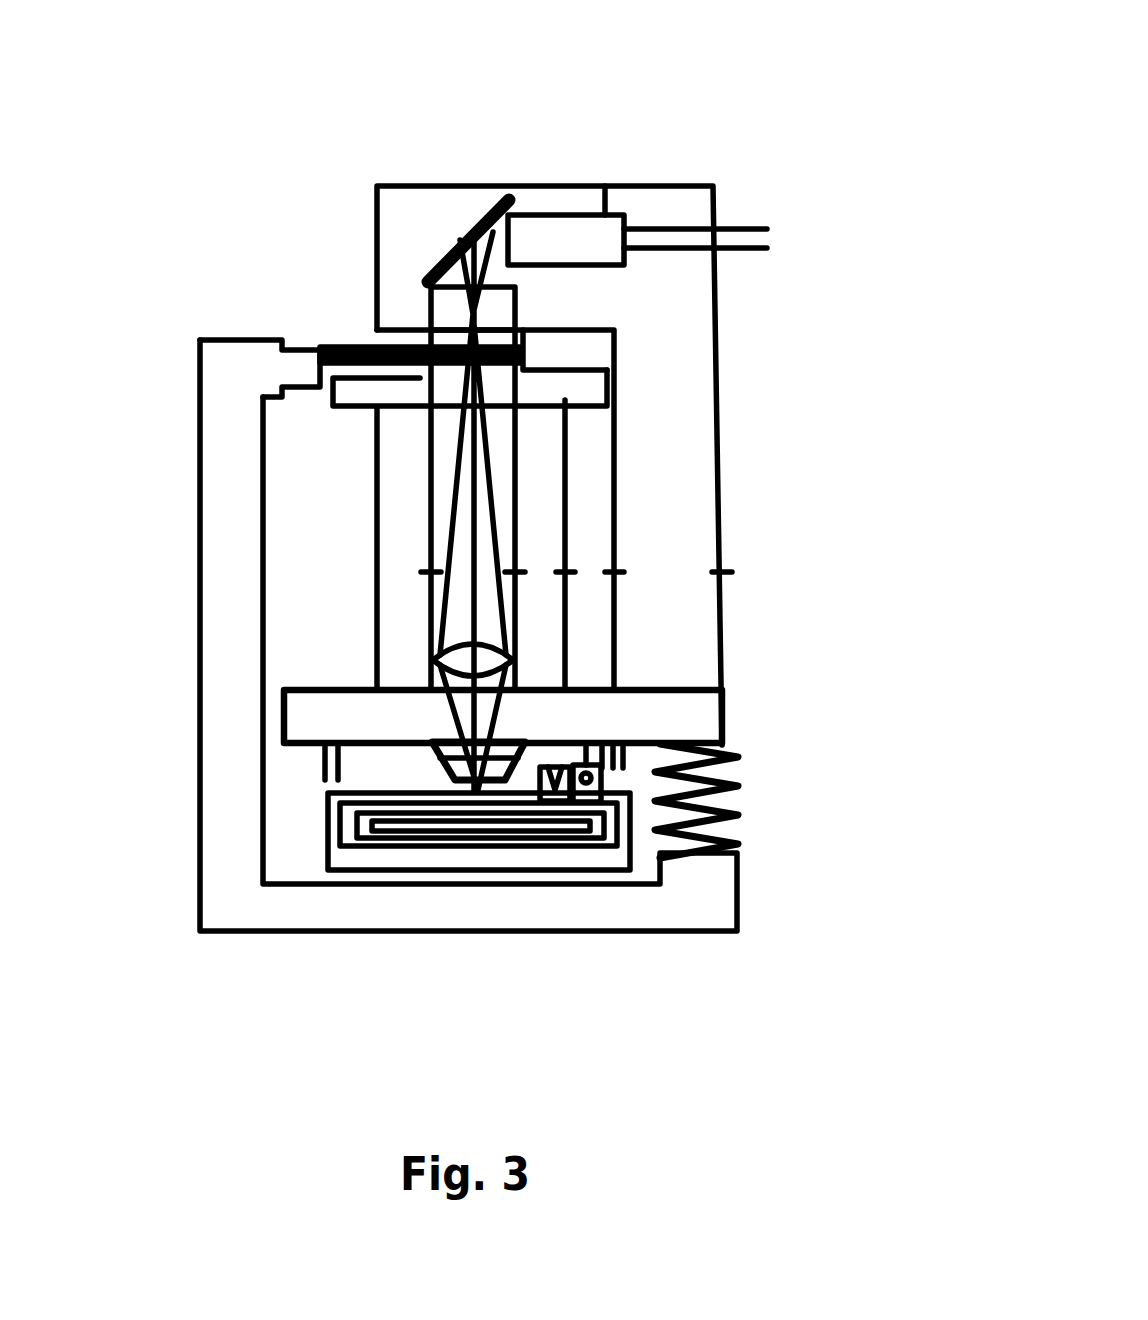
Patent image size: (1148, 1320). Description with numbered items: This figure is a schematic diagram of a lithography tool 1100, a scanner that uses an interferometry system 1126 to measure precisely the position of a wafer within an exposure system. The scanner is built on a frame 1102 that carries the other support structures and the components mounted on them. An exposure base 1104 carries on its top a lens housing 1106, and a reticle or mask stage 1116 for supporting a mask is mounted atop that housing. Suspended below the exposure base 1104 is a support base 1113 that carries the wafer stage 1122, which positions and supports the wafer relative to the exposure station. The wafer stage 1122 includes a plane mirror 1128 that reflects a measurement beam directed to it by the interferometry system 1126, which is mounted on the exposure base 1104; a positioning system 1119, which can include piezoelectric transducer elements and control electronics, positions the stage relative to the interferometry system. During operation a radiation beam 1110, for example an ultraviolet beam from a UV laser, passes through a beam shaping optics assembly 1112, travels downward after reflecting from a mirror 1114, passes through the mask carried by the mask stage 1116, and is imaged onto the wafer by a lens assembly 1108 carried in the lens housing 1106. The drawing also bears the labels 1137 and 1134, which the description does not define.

The lithography tool 1100 is at (574, 120).
The frame 1102 is at (737, 877).
The exposure base 1104 is at (722, 699).
The lens housing 1106 is at (567, 455).
The lens assembly 1108 is at (525, 500).
The radiation beam 1110 is at (773, 240).
The beam shaping optics assembly 1112 is at (613, 187).
The support base 1113 is at (400, 848).
The mirror 1114 is at (480, 222).
The mask stage 1116 is at (392, 349).
The positioning system 1119 is at (408, 855).
The wafer stage 1122 is at (440, 794).
The interferometry system 1126 is at (728, 776).
The plane mirror 1128 is at (523, 778).
The sample support 1134 is at (545, 835).
The bracket 1137 is at (365, 359).